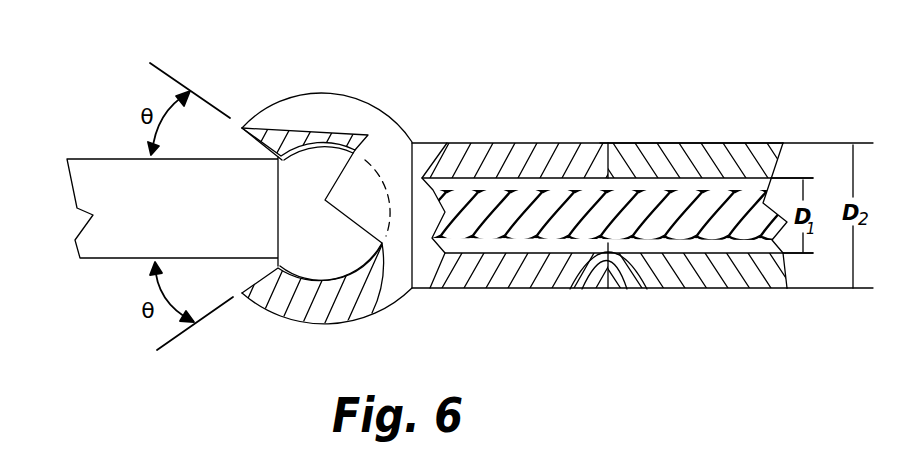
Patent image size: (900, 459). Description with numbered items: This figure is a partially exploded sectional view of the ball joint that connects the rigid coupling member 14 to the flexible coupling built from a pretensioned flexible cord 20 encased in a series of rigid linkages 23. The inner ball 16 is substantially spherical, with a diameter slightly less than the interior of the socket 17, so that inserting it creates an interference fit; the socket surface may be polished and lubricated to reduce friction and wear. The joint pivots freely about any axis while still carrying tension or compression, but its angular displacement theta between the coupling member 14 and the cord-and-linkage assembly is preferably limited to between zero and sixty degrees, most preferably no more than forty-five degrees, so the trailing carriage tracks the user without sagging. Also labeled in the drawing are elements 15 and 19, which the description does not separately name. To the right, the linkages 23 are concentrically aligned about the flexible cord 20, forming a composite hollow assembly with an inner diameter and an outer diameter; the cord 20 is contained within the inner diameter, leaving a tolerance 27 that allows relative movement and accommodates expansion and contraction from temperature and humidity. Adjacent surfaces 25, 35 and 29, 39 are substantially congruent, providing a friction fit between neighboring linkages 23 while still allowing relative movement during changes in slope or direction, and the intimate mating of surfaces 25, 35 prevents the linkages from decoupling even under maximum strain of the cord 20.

The coupling member 14 is at (118, 175).
The coupling collar 15 is at (333, 105).
The inner ball 16 is at (322, 252).
The socket 17 is at (334, 281).
The lip of collar 19 is at (257, 146).
The flexible cord 20 is at (714, 227).
The rigid linkages 23 is at (740, 155).
The mating surface 25 is at (617, 143).
The tolerance 27 is at (540, 245).
The adjacent surface 29 is at (647, 290).
The mating surface 35 is at (660, 145).
The adjacent surface 39 is at (577, 290).